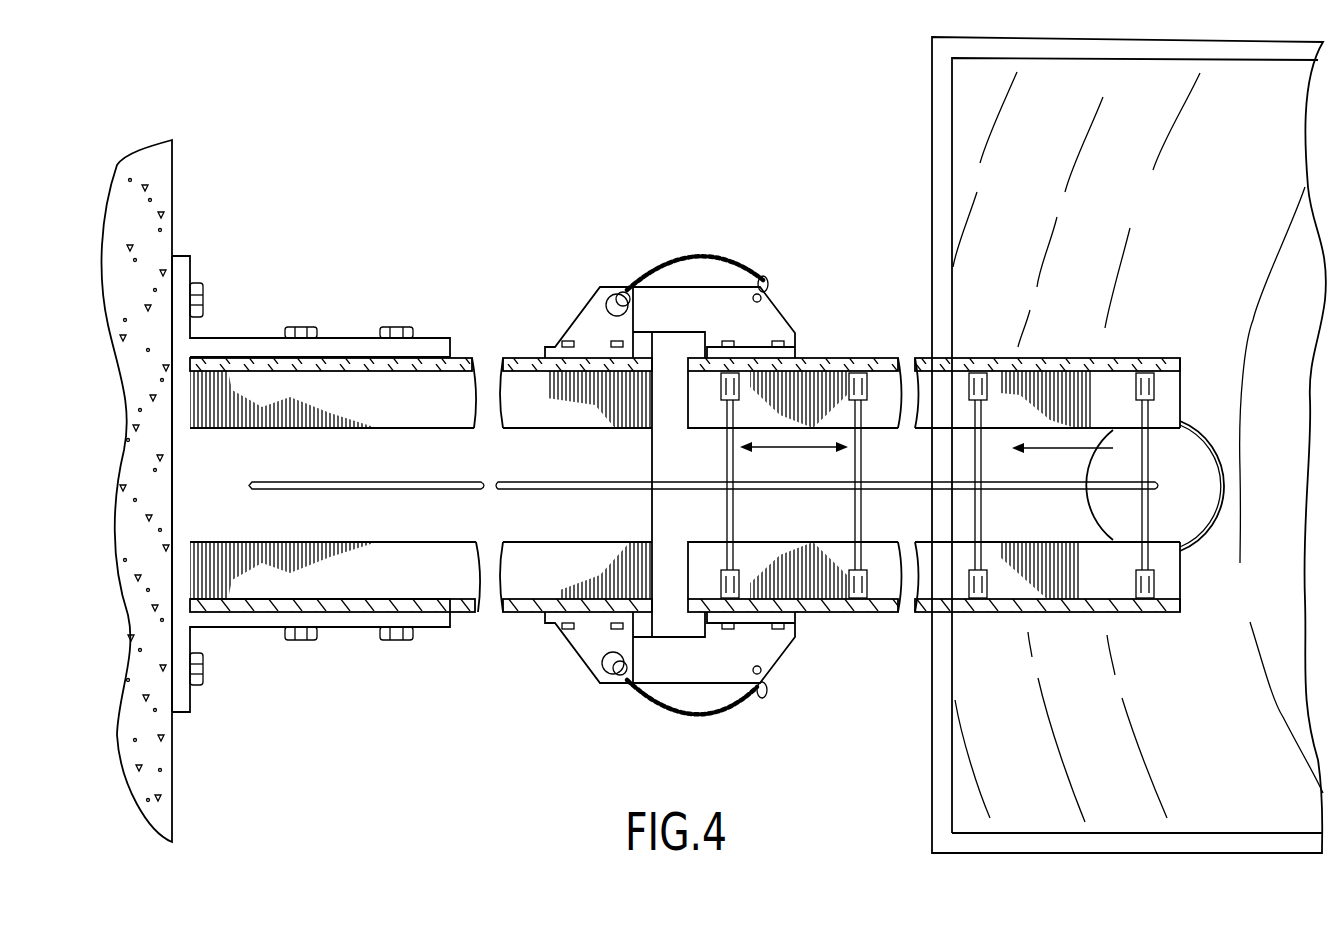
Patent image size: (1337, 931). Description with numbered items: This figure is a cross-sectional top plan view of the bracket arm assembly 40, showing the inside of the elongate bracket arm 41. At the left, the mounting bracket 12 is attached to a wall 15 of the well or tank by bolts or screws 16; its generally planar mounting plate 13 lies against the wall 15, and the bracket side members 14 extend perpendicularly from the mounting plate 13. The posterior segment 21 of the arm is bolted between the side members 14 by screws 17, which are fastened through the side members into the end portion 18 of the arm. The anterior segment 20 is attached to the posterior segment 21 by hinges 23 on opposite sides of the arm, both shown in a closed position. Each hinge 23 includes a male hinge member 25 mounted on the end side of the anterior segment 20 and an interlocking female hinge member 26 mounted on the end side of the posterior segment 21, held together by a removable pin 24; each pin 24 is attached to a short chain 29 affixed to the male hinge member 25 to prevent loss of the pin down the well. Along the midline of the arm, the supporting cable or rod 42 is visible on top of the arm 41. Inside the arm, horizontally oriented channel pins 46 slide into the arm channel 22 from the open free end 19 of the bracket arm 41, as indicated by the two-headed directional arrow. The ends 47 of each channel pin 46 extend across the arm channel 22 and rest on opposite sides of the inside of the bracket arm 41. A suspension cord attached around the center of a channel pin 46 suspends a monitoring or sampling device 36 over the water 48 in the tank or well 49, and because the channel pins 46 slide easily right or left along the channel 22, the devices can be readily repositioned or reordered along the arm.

The mounting bracket 12 is at (311, 462).
The mounting plate 13 is at (182, 268).
The bracket side members 14 is at (433, 628).
The wall 15 is at (153, 160).
The wall mounting screws 16 is at (205, 297).
The arm mounting screws 17 is at (395, 325).
The end portion 18 is at (410, 410).
The free end 19 is at (1181, 393).
The anterior segment 20 is at (1077, 526).
The posterior segment 21 is at (525, 420).
The arm channel 22 is at (672, 537).
The hinge 23 is at (679, 484).
The removable pin 24 is at (613, 674).
The male hinge member 25 is at (770, 325).
The female hinge member 26 is at (597, 320).
The chain 29 is at (706, 255).
The monitoring/sampling device 36 is at (1228, 483).
The bracket arm assembly 40 is at (679, 447).
The bracket arm 41 is at (937, 430).
The rod 42 is at (454, 489).
The channel pin 46 is at (848, 518).
The pin ends 47 is at (858, 373).
The water 48 is at (1205, 230).
The well 49 is at (1065, 445).